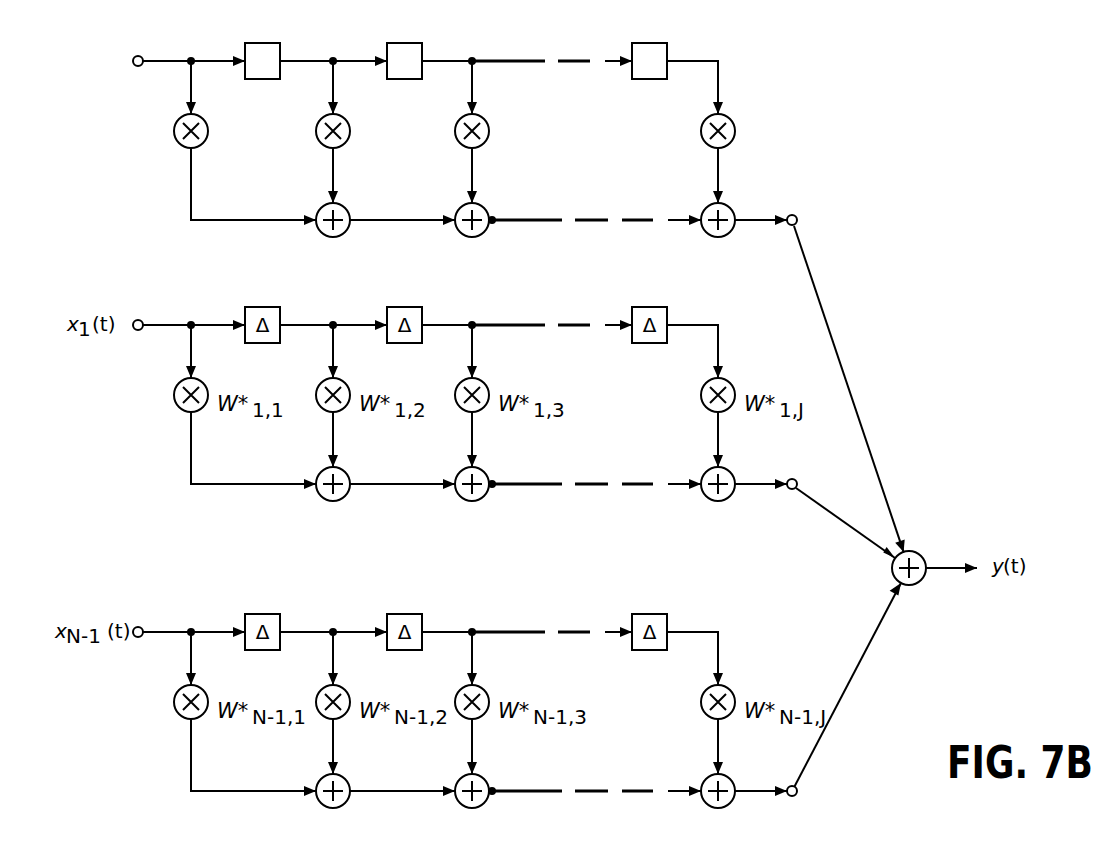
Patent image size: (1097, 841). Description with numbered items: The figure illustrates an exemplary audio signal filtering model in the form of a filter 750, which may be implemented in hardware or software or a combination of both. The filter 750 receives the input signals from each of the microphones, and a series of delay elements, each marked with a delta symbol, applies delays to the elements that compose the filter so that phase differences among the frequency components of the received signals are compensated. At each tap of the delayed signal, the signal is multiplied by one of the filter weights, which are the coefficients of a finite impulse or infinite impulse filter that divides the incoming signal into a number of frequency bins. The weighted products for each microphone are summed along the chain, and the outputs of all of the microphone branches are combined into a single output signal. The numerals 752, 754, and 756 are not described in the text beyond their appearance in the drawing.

The filter 750 is at (470, 30).
The delay elements (no visible numeral on this sheet) 752 is at (456, 61).
The weight multipliers (no visible numeral on this sheet) 754 is at (454, 131).
The summers (no visible numeral on this sheet) 756 is at (525, 220).